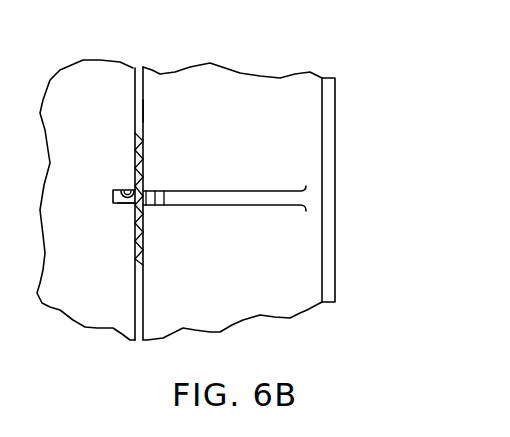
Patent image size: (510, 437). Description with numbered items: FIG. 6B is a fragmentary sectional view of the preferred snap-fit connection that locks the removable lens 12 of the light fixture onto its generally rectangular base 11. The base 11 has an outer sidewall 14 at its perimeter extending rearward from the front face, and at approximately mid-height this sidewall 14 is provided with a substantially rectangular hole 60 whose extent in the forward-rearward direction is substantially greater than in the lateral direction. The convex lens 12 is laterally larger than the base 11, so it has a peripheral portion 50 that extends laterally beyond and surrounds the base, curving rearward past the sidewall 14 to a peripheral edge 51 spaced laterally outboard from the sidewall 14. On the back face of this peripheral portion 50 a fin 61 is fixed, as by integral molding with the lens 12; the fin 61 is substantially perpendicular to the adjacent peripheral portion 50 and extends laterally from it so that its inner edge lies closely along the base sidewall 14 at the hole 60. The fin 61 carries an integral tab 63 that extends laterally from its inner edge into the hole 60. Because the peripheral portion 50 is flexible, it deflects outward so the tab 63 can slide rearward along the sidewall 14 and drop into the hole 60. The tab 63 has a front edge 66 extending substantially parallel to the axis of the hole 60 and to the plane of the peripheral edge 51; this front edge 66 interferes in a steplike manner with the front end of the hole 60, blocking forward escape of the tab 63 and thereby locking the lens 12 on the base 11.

The base 11 is at (149, 78).
The lens 12 is at (341, 85).
The outer sidewall 14 is at (143, 110).
The peripheral portion 50 is at (277, 100).
The peripheral edge 51 is at (329, 138).
The hole 60 is at (118, 186).
The fin 61 is at (247, 190).
The tab 63 is at (130, 208).
The front edge 66 is at (112, 197).